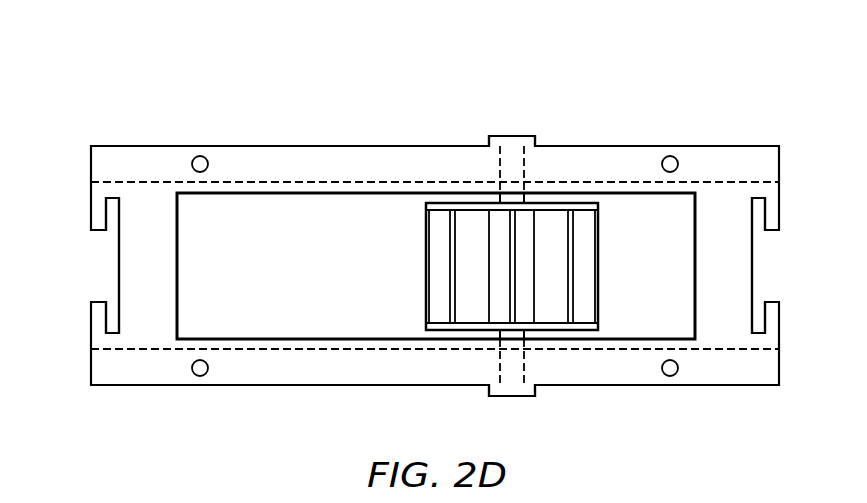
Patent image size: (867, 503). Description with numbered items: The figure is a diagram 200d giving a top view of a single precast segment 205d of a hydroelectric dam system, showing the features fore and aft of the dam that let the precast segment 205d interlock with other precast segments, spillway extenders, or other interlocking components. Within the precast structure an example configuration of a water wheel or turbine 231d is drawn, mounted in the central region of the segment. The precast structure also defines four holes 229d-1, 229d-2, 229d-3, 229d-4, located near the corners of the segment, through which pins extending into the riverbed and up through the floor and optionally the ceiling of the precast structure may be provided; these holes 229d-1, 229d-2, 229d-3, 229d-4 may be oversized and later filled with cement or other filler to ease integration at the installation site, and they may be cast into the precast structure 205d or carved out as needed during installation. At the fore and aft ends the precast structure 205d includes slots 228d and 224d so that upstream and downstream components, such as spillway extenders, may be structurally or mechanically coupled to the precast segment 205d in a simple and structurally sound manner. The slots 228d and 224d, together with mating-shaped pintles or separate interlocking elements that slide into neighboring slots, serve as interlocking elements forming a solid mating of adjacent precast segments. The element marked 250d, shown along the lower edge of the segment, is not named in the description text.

The diagram 200d is at (255, 58).
The precast segment 205d is at (320, 160).
The housing bottom portion 250d is at (407, 385).
The slot 228d is at (113, 229).
The slot 224d is at (757, 229).
The water wheel or turbine 231d is at (426, 266).
The hole 229d-1 is at (200, 376).
The hole 229d-2 is at (200, 156).
The hole 229d-3 is at (670, 156).
The hole 229d-4 is at (670, 376).